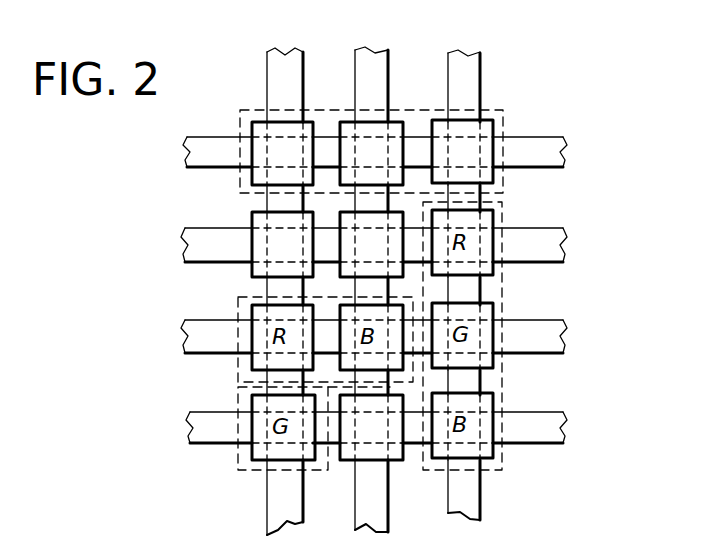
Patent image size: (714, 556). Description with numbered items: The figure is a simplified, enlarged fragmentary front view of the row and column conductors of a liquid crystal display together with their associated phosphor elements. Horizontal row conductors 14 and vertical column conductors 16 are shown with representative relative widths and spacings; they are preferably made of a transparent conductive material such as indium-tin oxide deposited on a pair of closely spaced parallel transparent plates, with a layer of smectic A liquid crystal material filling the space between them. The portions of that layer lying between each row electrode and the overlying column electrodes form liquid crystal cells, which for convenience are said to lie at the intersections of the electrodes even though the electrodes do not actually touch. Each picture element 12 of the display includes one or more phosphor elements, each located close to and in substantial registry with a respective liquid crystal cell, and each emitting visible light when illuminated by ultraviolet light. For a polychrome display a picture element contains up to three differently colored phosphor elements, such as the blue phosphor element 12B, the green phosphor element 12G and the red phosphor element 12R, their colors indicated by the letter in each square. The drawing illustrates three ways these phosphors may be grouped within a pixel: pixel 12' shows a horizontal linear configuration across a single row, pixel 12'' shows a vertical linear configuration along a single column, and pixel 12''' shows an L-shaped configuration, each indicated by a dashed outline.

The picture element 12 is at (493, 270).
The pixel with horizontal linear configuration 12' is at (329, 158).
The pixel with vertical linear configuration 12'' is at (410, 325).
The pixel with L-shaped configuration 12''' is at (265, 438).
The red phosphor element 12R is at (250, 123).
The green phosphor element 12G is at (335, 120).
The blue phosphor element 12B is at (425, 120).
The row conductor 14 is at (560, 152).
The column conductor 16 is at (470, 68).